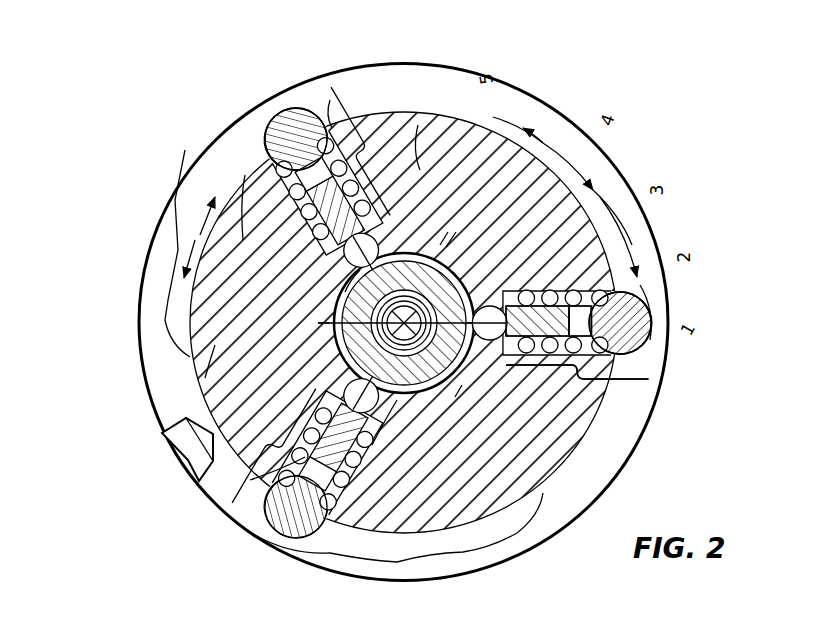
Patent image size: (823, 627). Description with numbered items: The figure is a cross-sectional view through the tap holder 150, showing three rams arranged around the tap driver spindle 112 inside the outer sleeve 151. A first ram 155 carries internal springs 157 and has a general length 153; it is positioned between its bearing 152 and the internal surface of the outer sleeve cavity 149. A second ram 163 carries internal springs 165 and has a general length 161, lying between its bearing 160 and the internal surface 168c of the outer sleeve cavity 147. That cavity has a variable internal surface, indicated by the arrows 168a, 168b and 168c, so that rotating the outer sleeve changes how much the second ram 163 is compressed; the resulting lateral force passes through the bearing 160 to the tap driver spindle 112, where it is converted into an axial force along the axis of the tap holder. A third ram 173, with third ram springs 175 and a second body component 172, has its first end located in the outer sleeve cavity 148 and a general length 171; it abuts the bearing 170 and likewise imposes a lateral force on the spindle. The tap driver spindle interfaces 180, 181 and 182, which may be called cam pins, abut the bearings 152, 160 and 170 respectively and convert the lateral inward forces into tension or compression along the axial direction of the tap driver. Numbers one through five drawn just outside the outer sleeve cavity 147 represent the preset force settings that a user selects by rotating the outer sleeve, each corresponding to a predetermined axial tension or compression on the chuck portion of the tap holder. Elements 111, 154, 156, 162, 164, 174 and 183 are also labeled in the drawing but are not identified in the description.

The rotor body 111 is at (470, 135).
The tap driver spindle 112 is at (392, 392).
The outer sleeve cavity 147 is at (570, 172).
The outer sleeve cavity 148 is at (470, 537).
The outer sleeve cavity 149 is at (218, 183).
The tap holder 150 is at (150, 105).
The outer sleeve 151 is at (430, 66).
The bearing 152 is at (422, 170).
The general length 153 is at (345, 118).
The flexure line 154 is at (243, 240).
The first ram 155 is at (310, 110).
The upper cap 156 is at (320, 125).
The internal springs 157 is at (297, 150).
The bearing 160 is at (503, 360).
The general length 161 is at (617, 413).
The spring block 162 is at (600, 238).
The second ram 163 is at (643, 347).
The spring block 164 is at (605, 268).
The internal springs 165 is at (640, 338).
The variable surface arrow 168a is at (500, 125).
The variable surface arrow 168b is at (593, 190).
The internal surface 168c is at (660, 282).
The bearing 170 is at (205, 378).
The general length 171 is at (212, 458).
The second body component 172 is at (397, 400).
The third ram 173 is at (303, 467).
The flexure line 174 is at (305, 457).
The third ram springs 175 is at (302, 525).
The tap driver spindle interface 180 is at (448, 232).
The tap driver spindle interface 181 is at (455, 397).
The tap driver spindle interface 182 is at (320, 324).
The rotor arc 183 is at (345, 292).